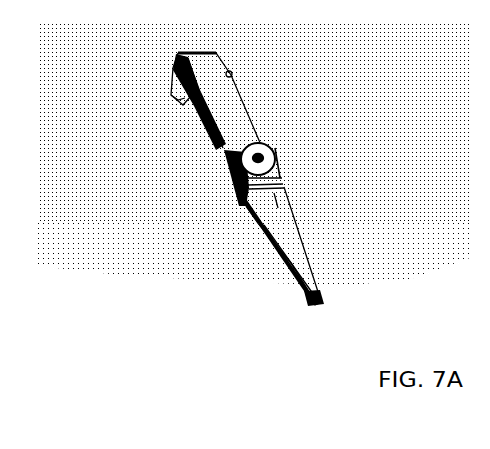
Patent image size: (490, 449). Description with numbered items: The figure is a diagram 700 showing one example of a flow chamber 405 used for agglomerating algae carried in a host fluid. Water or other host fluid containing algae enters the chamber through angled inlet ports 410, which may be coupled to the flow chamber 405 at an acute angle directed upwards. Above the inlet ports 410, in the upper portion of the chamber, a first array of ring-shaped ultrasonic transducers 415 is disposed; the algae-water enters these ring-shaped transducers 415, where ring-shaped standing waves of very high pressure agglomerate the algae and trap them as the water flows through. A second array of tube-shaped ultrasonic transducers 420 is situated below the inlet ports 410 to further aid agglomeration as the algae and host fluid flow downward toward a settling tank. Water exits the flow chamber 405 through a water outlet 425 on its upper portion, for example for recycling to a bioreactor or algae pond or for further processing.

The diagram 700 is at (130, 368).
The flow chamber 405 is at (325, 283).
The algae-host fluid inlet 410 is at (163, 91).
The ring-shaped ultrasonic transducers 415 is at (273, 144).
The tube-shaped ultrasonic transducers 420 is at (290, 211).
The water outlet 425 is at (173, 43).